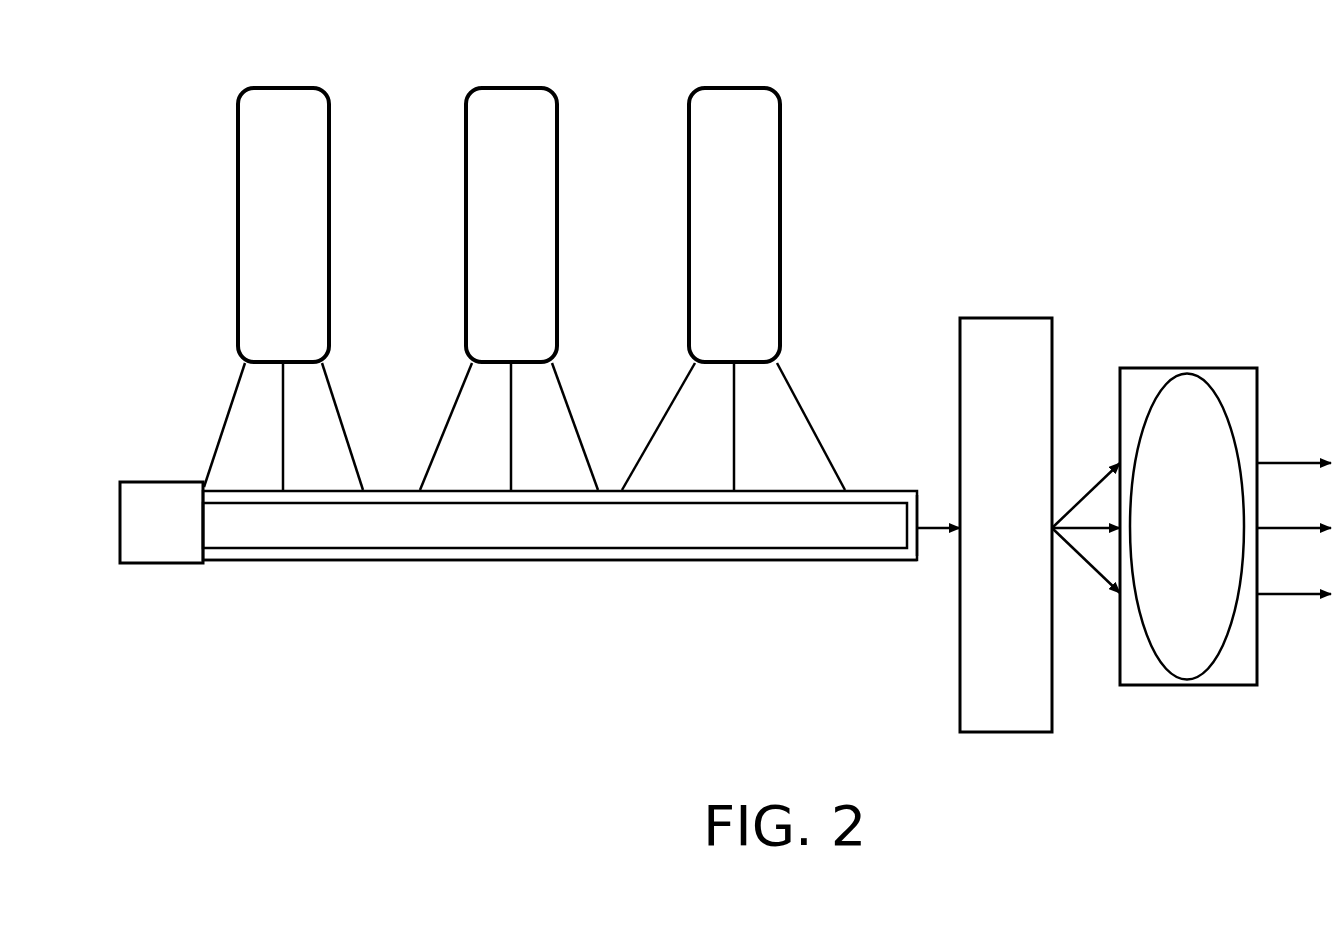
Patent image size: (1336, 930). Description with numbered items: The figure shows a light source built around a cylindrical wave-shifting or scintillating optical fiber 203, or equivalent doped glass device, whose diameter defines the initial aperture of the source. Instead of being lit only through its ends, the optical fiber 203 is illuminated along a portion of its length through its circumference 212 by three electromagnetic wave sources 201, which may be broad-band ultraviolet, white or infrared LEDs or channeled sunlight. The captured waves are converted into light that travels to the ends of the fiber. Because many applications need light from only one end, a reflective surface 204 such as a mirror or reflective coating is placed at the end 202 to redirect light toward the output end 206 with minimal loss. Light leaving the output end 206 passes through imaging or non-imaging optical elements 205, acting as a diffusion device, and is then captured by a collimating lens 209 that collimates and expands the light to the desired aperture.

The electromagnetic wave sources 201 is at (282, 86).
The end of the optical fiber 202 is at (201, 481).
The optical fiber 203 is at (585, 538).
The reflective surface 204 is at (121, 564).
The optical elements 205 is at (1018, 317).
The output end 206 is at (916, 562).
The collimating lens 209 is at (1217, 367).
The circumference 212 is at (549, 561).